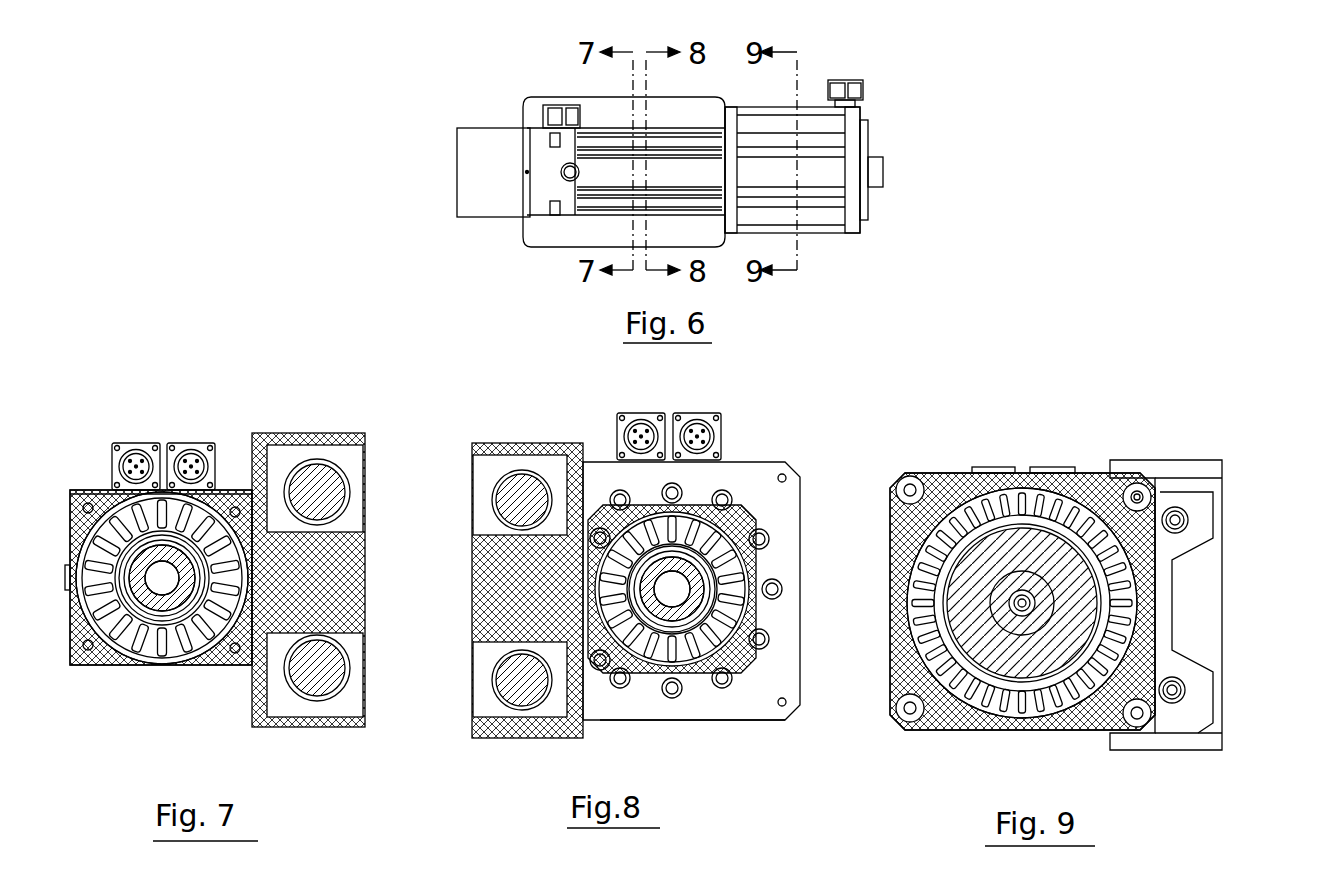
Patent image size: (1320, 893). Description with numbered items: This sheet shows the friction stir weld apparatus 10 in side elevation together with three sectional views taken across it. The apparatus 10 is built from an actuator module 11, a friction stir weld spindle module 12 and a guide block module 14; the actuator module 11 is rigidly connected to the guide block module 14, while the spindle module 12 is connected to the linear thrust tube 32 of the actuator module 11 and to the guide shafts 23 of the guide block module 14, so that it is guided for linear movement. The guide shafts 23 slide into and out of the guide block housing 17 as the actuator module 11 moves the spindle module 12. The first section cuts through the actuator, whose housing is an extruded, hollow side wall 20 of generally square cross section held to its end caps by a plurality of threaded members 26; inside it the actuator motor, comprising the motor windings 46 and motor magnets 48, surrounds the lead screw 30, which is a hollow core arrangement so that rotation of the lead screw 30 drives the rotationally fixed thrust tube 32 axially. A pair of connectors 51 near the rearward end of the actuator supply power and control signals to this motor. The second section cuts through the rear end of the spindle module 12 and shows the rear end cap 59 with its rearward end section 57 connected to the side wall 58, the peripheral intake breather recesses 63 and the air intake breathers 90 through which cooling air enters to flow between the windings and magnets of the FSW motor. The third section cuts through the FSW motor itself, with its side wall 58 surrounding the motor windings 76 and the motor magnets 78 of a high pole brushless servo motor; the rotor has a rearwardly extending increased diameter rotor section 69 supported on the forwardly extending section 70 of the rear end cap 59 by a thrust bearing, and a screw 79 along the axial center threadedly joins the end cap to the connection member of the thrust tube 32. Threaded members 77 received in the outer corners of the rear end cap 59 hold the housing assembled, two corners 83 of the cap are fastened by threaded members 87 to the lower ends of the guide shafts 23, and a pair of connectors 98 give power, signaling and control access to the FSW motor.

In FIG. 6, the friction stir weld apparatus 10 is at (415, 153).
In FIG. 6, the actuator module 11 is at (599, 213).
In FIG. 6, the friction stir weld spindle module 12 is at (823, 238).
In FIG. 6, the guide block module 14 is at (573, 95).
In FIG. 7, the guide block housing 17 is at (263, 433).
In FIG. 8, the guide block housing 17 is at (495, 575).
In FIG. 9, the guide block housing 17 is at (1212, 633).
In FIG. 7, the side wall 20 is at (70, 547).
In FIG. 8, the side wall 20 is at (756, 603).
In FIG. 7, the guide shafts 23 is at (320, 485).
In FIG. 8, the guide shafts 23 is at (527, 695).
In FIG. 7, the threaded members 26 is at (88, 503).
In FIG. 8, the threaded members 26 is at (737, 522).
In FIG. 7, the lead screw 30 is at (162, 585).
In FIG. 8, the lead screw 30 is at (683, 597).
In FIG. 7, the thrust tube 32 is at (185, 617).
In FIG. 8, the thrust tube 32 is at (620, 585).
In FIG. 7, the motor windings 46 is at (88, 650).
In FIG. 8, the motor windings 46 is at (742, 598).
In FIG. 7, the motor magnets 48 is at (192, 505).
In FIG. 8, the motor magnets 48 is at (612, 690).
In FIG. 9, the motor magnets 48 is at (1000, 677).
In FIG. 6, the connectors 51 is at (553, 117).
In FIG. 7, the connectors 51 is at (143, 442).
In FIG. 8, the rearward end section 57 is at (788, 522).
In FIG. 9, the side wall 58 is at (892, 623).
In FIG. 8, the rear end cap 59 is at (752, 705).
In FIG. 9, the rear end cap 59 is at (1155, 716).
In FIG. 8, the intake breather recesses 63 is at (675, 698).
In FIG. 9, the rotor section 69 is at (1140, 493).
In FIG. 9, the second forwardly extending reduced diameter section 70 is at (1002, 593).
In FIG. 9, the motor windings 76 is at (1043, 503).
In FIG. 8, the threaded members 77 is at (785, 475).
In FIG. 9, the threaded members 77 is at (1175, 492).
In FIG. 9, the motor magnets 78 is at (1007, 650).
In FIG. 9, the screw 79 is at (1022, 617).
In FIG. 9, the corners 83 is at (1195, 500).
In FIG. 9, the threaded members 87 is at (1180, 526).
In FIG. 8, the air intake breathers 90 is at (663, 490).
In FIG. 6, the connectors 98 is at (845, 80).
In FIG. 8, the connectors 98 is at (697, 415).
In FIG. 9, the connectors 98 is at (990, 468).